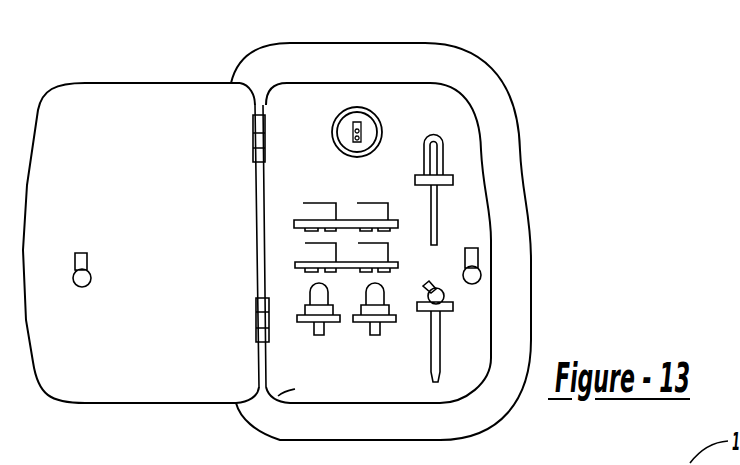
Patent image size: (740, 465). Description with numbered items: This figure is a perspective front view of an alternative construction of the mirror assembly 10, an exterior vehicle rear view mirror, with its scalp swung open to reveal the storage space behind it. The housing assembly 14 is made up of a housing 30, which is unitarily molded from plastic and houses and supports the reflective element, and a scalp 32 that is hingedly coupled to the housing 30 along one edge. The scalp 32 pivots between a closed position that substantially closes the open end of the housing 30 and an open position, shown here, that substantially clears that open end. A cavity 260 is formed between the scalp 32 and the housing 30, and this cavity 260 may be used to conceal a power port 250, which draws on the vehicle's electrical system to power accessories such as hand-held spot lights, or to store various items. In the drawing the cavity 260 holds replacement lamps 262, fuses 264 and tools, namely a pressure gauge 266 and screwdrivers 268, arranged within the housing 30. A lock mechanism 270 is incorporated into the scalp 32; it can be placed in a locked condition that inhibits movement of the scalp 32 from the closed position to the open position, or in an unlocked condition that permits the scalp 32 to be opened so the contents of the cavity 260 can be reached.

The mirror assembly 10 is at (540, 267).
The housing assembly 14 is at (468, 48).
The housing 30 is at (500, 80).
The scalp 32 is at (48, 367).
The power port 250 is at (355, 107).
The cavity 260 is at (268, 390).
The replacement lamps 262 is at (310, 333).
The fuses 264 is at (325, 203).
The pressure gauge 266 is at (440, 340).
The screwdrivers 268 is at (445, 150).
The lock mechanism 270 is at (89, 273).